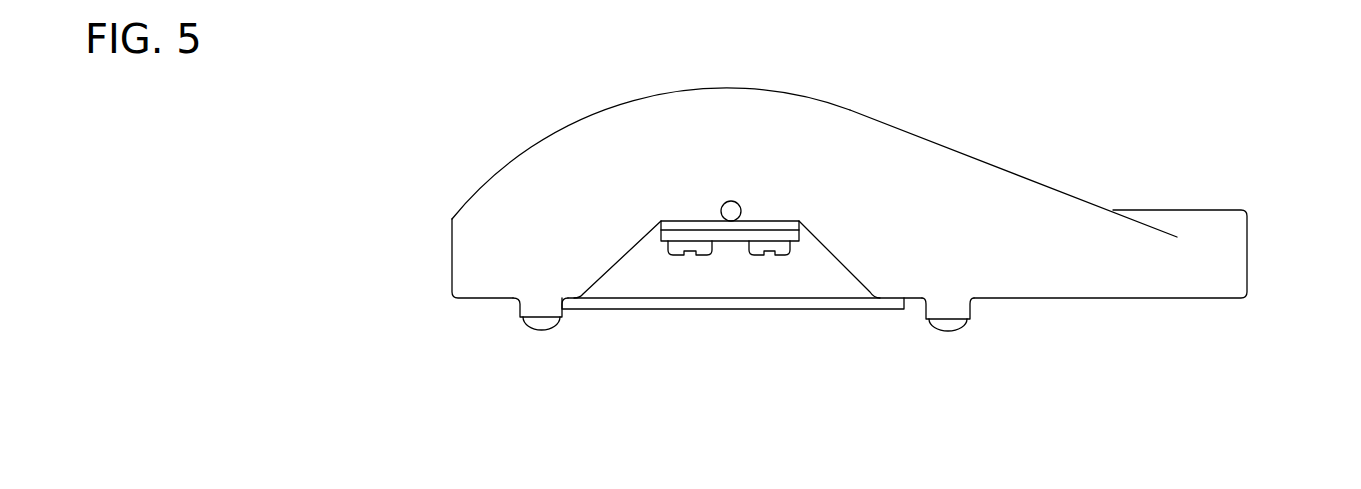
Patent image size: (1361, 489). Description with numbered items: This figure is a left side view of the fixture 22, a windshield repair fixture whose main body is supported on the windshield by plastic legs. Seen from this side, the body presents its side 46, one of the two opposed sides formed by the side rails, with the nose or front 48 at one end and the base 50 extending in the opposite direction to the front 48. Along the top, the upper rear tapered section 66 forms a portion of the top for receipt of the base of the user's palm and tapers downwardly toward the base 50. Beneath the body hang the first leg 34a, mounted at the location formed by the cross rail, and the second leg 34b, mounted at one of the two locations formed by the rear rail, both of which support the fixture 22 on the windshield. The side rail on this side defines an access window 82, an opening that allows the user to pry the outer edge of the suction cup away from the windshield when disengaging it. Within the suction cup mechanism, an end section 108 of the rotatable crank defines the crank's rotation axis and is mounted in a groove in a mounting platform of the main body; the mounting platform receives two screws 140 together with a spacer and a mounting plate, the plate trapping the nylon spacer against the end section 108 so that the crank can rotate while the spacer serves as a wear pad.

The fixture 22 is at (857, 213).
The upper rear tapered section 66 is at (485, 185).
The side 46 is at (742, 162).
The end section 108 is at (742, 203).
The access window 82 is at (845, 263).
The nose or front 48 is at (1247, 298).
The base 50 is at (453, 293).
The second leg 34b is at (537, 330).
The first leg 34a is at (957, 331).
The screws 140 is at (679, 255).